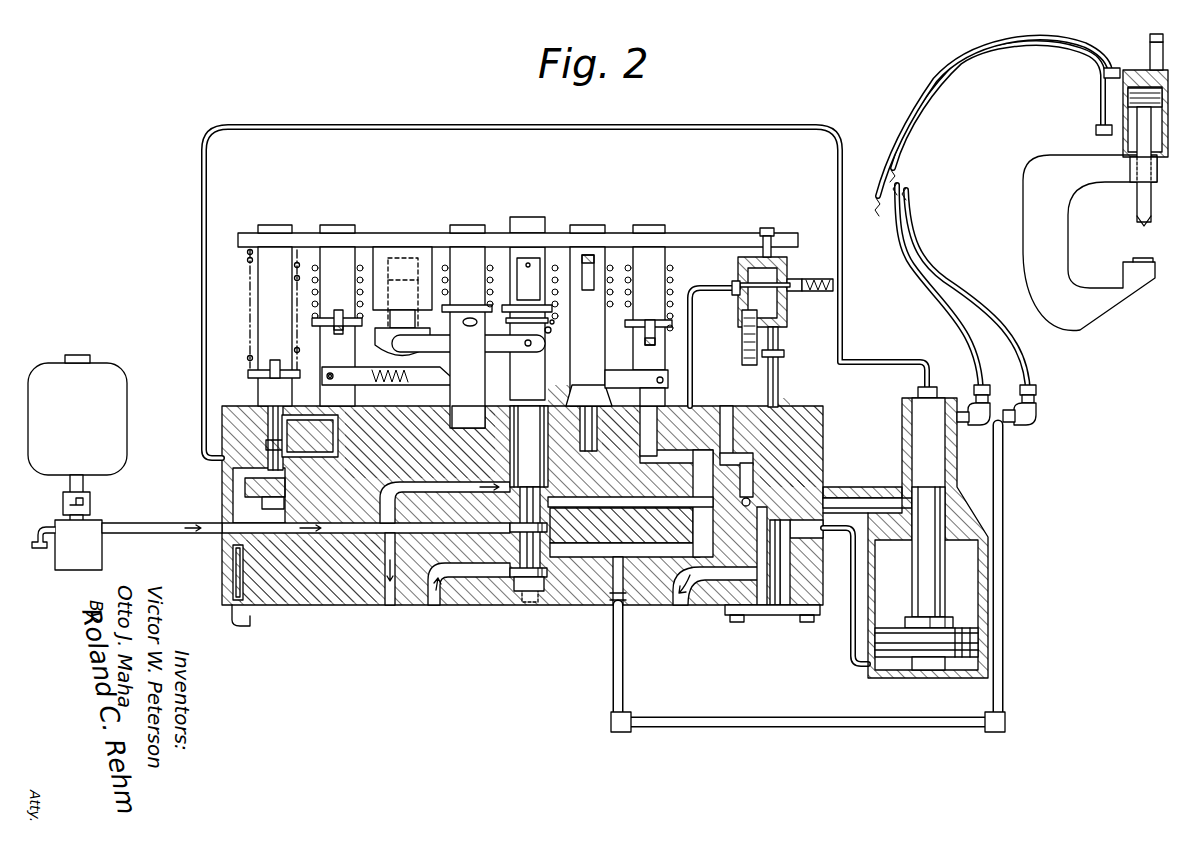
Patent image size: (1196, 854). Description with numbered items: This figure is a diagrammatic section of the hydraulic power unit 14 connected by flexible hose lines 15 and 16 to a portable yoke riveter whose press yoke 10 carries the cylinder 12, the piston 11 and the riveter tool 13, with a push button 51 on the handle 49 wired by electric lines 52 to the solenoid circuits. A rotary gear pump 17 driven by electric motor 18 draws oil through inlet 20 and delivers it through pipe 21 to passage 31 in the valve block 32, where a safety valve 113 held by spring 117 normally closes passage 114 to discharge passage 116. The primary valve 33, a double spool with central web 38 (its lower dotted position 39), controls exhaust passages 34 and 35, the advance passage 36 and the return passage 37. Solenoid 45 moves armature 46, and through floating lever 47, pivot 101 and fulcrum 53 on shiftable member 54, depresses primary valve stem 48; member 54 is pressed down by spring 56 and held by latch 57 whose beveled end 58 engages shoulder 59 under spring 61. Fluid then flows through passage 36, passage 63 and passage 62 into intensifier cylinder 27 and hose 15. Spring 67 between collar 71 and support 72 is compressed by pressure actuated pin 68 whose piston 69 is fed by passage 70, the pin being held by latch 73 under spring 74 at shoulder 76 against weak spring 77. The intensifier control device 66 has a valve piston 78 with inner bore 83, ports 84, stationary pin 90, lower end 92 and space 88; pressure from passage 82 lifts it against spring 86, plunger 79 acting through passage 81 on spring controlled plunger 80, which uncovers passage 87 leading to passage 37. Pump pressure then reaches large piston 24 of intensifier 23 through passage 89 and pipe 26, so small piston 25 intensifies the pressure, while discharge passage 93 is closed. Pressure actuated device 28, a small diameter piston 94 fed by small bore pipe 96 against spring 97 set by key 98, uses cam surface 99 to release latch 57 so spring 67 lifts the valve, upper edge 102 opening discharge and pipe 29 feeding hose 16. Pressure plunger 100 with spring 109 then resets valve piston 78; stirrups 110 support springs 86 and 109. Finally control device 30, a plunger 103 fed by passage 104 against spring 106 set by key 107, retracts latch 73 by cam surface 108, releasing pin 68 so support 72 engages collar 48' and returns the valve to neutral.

The press yoke 10 is at (1035, 212).
The piston 11 is at (1128, 96).
The cylinder 12 is at (1158, 162).
The riveter tool 13 is at (1152, 203).
The power unit 14 is at (313, 609).
The hose line 15 is at (1098, 72).
The hose line 16 is at (1100, 65).
The rotary gear pump 17 is at (103, 544).
The electric motor 18 is at (110, 382).
The inlet 20 is at (44, 526).
The pipe 21 is at (130, 522).
The intensifier 23 is at (999, 522).
The large piston 24 is at (985, 645).
The small piston 25 is at (945, 572).
The pipe 26 is at (848, 657).
The intensifier cylinder 27 is at (938, 458).
The pressure actuated device 28 is at (343, 217).
The pipe 29 is at (886, 727).
The control device 30 is at (653, 217).
The passage 31 is at (352, 533).
The valve block 32 is at (418, 606).
The primary valve 33 is at (531, 209).
The passage 34 is at (390, 606).
The passage 35 is at (446, 588).
The passage 36 is at (621, 525).
The passage 37 is at (617, 606).
The central web 38 is at (516, 578).
The dotted line position 39 is at (520, 592).
The solenoid 45 is at (393, 246).
The armature 46 is at (412, 336).
The floating lever 47 is at (502, 352).
The primary valve stem 48 is at (557, 343).
The collar 48' is at (576, 331).
The riveter handle 49 is at (1163, 58).
The push button 51 is at (1163, 38).
The electric lines 52 is at (877, 202).
The fulcrum 53 is at (472, 317).
The shiftable member 54 is at (474, 218).
The spring 56 is at (503, 252).
The latch 57 is at (348, 372).
The beveled end 58 is at (452, 378).
The shoulder 59 is at (468, 411).
The spring 61 is at (420, 444).
The passage 62 is at (868, 500).
The passage 63 is at (772, 478).
The intensifier control device 66 is at (794, 399).
The spring 67 is at (552, 272).
The pressure actuated pin 68 is at (597, 219).
The piston 69 is at (586, 405).
The passage 70 is at (590, 452).
The collar 71 is at (528, 279).
The support 72 is at (527, 304).
The latch 73 is at (616, 370).
The spring 74 is at (618, 431).
The shoulder 76 is at (597, 390).
The spring 77 is at (598, 292).
The valve piston 78 is at (795, 438).
The plunger 79 is at (780, 365).
The spring controlled plunger 80 is at (750, 262).
The passage 81 is at (768, 240).
The passage 82 is at (752, 420).
The inner bore 83 is at (800, 455).
The ports 84 is at (768, 358).
The spring 86 is at (742, 330).
The passage 87 is at (706, 286).
The space 88 is at (763, 616).
The passage 89 is at (815, 497).
The stationary pin 90 is at (776, 612).
The lower end 92 is at (788, 610).
The discharge passage 93 is at (712, 575).
The small diameter piston 94 is at (310, 436).
The small bore pipe 96 is at (497, 126).
The spring 97 is at (316, 270).
The pin or key 98 is at (342, 322).
The cam surface 99 is at (328, 380).
The pressure plunger 100 is at (795, 282).
The pivot 101 is at (400, 348).
The upper edge 102 is at (528, 494).
The plunger 103 is at (738, 408).
The passage 104 is at (675, 606).
The spring 106 is at (670, 265).
The adjusting key 107 is at (651, 330).
The cam surface 108 is at (668, 376).
The spring 109 is at (822, 295).
The hinged stirrups 110 is at (846, 270).
The safety valve 113 is at (268, 420).
The passage 114 is at (262, 503).
The discharge passage 116 is at (236, 555).
The spring 117 is at (248, 258).